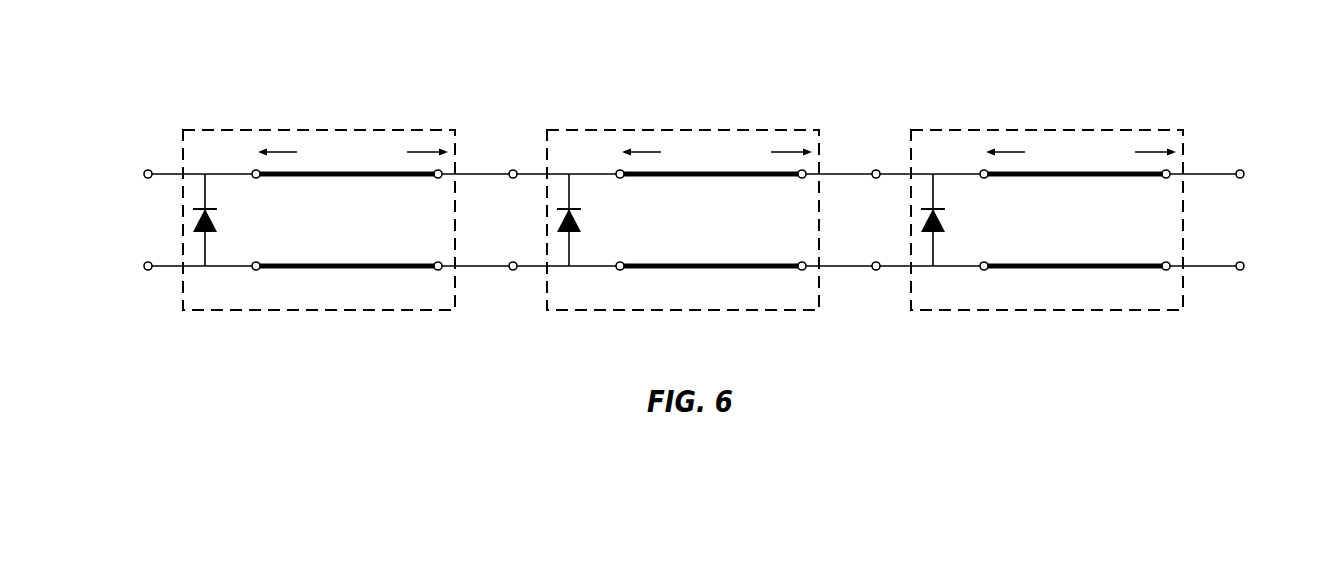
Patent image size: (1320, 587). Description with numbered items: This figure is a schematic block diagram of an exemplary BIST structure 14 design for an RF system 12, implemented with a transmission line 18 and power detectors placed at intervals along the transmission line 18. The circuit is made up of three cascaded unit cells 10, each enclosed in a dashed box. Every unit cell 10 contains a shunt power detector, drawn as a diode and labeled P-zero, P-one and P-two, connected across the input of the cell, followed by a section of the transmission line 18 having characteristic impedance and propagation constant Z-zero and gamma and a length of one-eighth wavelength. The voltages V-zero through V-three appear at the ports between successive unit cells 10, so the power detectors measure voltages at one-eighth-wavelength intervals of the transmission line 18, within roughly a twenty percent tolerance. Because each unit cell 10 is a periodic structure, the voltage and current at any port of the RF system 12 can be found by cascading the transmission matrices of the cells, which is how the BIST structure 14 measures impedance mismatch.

The unit cell 10 is at (362, 129).
The RF system 12 is at (222, 43).
The BIST structure 14 is at (1216, 101).
The transmission line 18 is at (352, 266).